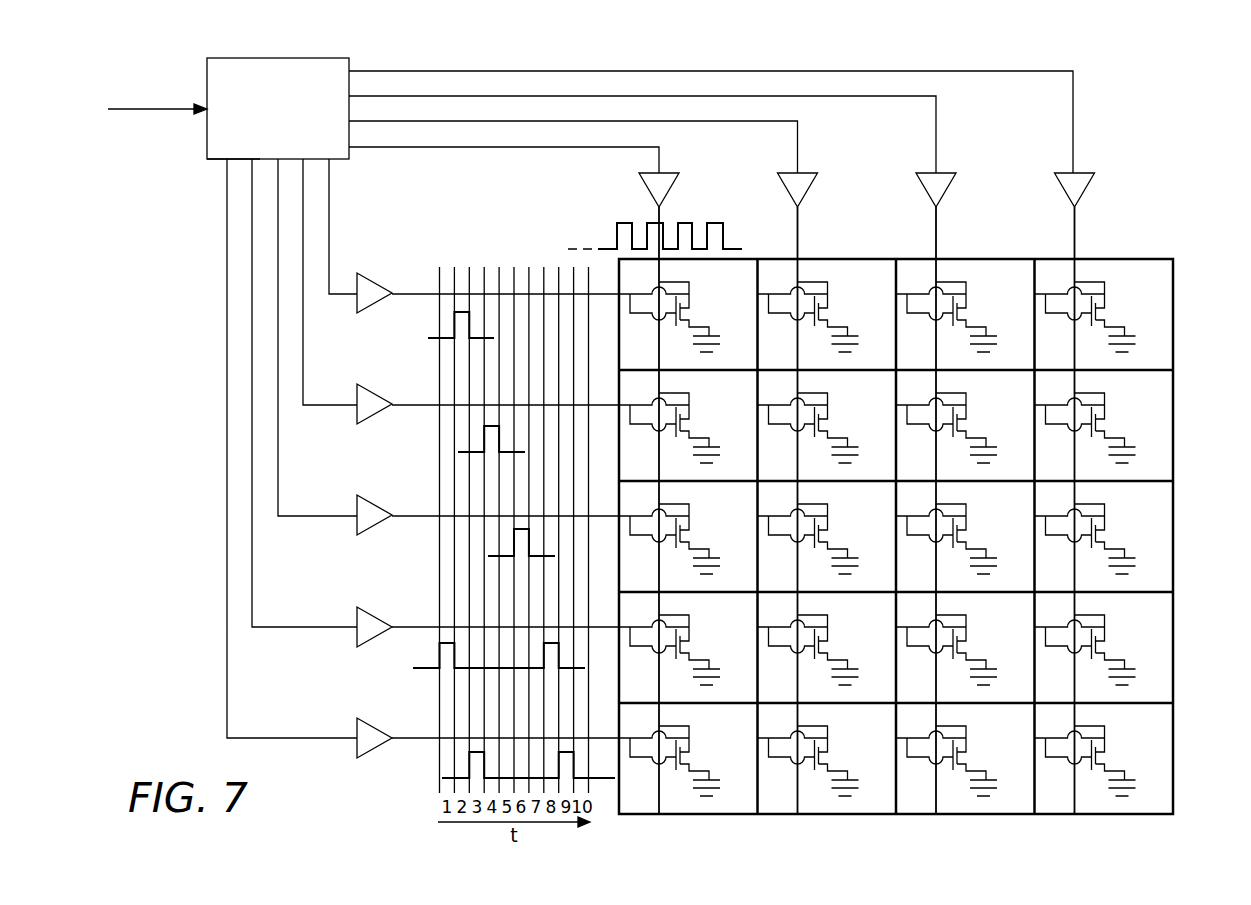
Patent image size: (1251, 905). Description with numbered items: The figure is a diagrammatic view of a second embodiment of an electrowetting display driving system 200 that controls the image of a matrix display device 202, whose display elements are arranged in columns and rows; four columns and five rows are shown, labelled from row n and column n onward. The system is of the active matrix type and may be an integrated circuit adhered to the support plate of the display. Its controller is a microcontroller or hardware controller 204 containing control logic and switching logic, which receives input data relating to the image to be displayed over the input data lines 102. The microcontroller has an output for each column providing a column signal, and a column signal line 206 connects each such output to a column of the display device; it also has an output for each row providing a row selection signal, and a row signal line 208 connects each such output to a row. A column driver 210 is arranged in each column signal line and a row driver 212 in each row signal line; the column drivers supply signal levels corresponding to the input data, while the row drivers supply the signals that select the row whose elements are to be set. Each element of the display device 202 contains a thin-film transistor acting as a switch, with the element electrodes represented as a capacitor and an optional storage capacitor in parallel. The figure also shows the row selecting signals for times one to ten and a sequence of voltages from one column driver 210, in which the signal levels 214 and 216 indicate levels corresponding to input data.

The input data lines 102 is at (160, 107).
The display driving system 200 is at (300, 51).
The matrix display device 202 is at (1173, 259).
The microcontroller or hardware controller 204 is at (207, 160).
The column signal line 206 is at (385, 71).
The row signal line 208 is at (227, 335).
The column driver 210 is at (639, 190).
The row driver 212 is at (375, 277).
The signal level 214 is at (612, 223).
The signal level 216 is at (568, 249).